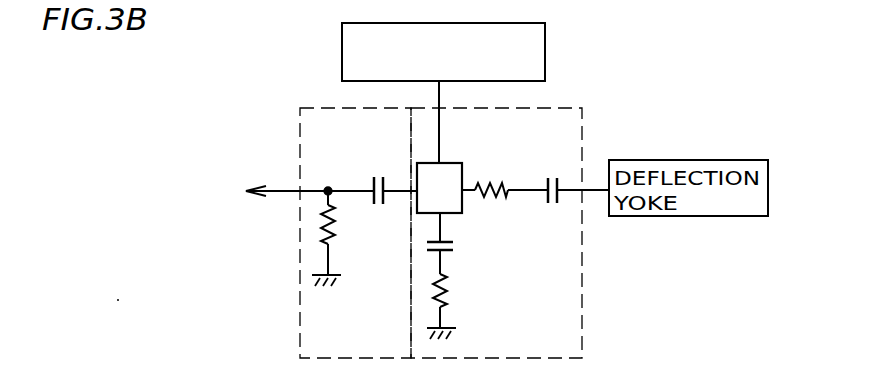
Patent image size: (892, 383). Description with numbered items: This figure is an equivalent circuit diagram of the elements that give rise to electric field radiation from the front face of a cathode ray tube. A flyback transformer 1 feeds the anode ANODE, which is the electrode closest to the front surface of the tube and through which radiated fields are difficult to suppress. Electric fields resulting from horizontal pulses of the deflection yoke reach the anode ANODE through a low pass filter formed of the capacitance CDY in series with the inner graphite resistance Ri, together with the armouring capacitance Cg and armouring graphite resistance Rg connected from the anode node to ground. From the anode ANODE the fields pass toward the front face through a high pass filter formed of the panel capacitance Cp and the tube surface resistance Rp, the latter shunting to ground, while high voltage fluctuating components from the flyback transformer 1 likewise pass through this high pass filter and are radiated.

The flyback transformer 1 is at (545, 52).
The panel capacitance Cp is at (391, 174).
The tube surface resistance Rp is at (342, 238).
The anode ANODE is at (440, 183).
The inner graphite resistance Ri is at (505, 174).
The capacitance CDY is at (570, 175).
The armouring capacitance Cg is at (460, 243).
The armouring graphite resistance Rg is at (457, 306).